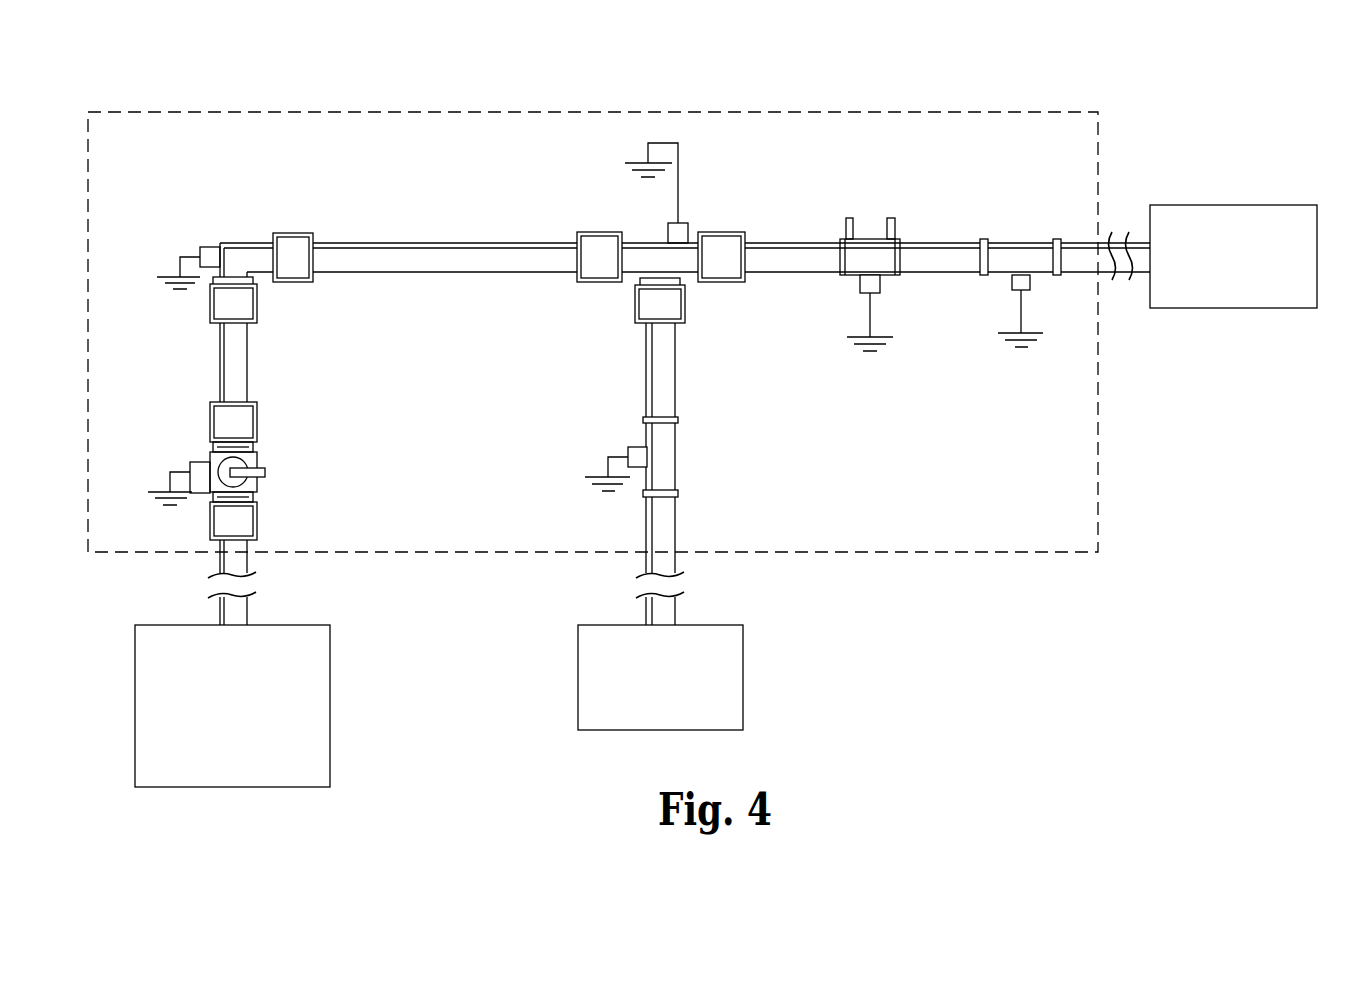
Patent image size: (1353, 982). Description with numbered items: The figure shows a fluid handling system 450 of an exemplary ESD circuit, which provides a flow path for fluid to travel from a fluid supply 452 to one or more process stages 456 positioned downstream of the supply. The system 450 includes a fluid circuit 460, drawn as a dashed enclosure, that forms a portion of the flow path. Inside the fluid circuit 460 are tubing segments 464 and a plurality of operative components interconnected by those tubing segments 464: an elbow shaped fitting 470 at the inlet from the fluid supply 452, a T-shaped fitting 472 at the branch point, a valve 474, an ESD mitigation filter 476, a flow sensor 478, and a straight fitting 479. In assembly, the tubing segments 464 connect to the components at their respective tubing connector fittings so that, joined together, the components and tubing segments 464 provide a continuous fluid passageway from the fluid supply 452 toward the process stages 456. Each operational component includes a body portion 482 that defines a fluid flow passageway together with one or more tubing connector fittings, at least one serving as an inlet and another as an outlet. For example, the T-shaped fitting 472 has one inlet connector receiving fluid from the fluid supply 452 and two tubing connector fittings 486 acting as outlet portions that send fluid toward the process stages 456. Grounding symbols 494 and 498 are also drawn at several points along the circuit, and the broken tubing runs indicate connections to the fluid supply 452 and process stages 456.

The fluid handling system 450 is at (1152, 88).
The fluid supply 452 is at (333, 675).
The process stages 456 is at (745, 676).
The fluid circuit 460 is at (147, 112).
The tubing segments 464 is at (412, 274).
The elbow shaped fitting 470 is at (254, 303).
The T-shaped fitting 472 is at (726, 274).
The valve 474 is at (258, 458).
The ESD mitigation filter 476 is at (996, 268).
The flow sensor 478 is at (881, 268).
The straight fitting 479 is at (676, 455).
The body portion 482 is at (232, 265).
The tubing connector fittings 486 is at (273, 470).
The ground 494 is at (150, 488).
The ground connection 498 is at (1029, 279).